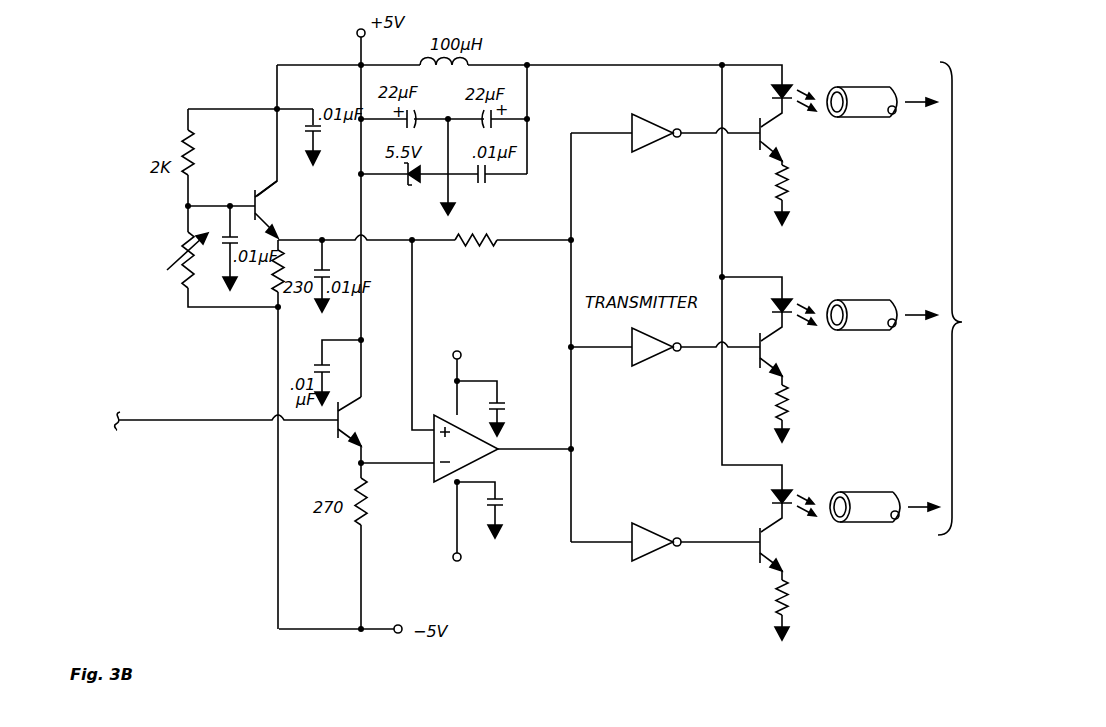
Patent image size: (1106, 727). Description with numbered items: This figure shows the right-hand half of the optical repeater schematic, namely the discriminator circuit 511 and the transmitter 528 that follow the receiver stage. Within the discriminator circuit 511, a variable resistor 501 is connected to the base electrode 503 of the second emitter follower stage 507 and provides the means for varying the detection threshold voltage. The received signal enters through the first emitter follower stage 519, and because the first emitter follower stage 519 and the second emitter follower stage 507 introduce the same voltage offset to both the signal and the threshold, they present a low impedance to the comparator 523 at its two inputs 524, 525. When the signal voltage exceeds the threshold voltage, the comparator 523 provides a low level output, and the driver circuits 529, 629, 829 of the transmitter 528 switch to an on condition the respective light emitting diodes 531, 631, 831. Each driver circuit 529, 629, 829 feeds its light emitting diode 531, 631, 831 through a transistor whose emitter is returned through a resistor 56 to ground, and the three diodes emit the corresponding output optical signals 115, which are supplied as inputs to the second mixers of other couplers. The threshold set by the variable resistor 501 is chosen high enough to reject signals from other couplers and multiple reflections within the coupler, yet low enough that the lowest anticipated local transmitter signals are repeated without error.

The variable resistor 501 is at (186, 237).
The base electrode 503 is at (255, 200).
The second emitter follower stage 507 is at (279, 209).
The discriminator circuit 511 is at (466, 394).
The first emitter follower stage 519 is at (358, 421).
The comparator 523 is at (500, 453).
The comparator input 524 is at (413, 448).
The comparator input 525 is at (433, 425).
The transmitter 528 is at (745, 310).
The driver circuit 529 is at (756, 129).
The light emitting diode 531 is at (776, 93).
The emitter resistor 56 is at (795, 400).
The driver circuit 629 is at (759, 387).
The light emitting diode 631 is at (777, 300).
The driver circuit 829 is at (742, 543).
The light emitting diode 831 is at (775, 496).
The output optical signals 115 is at (935, 284).